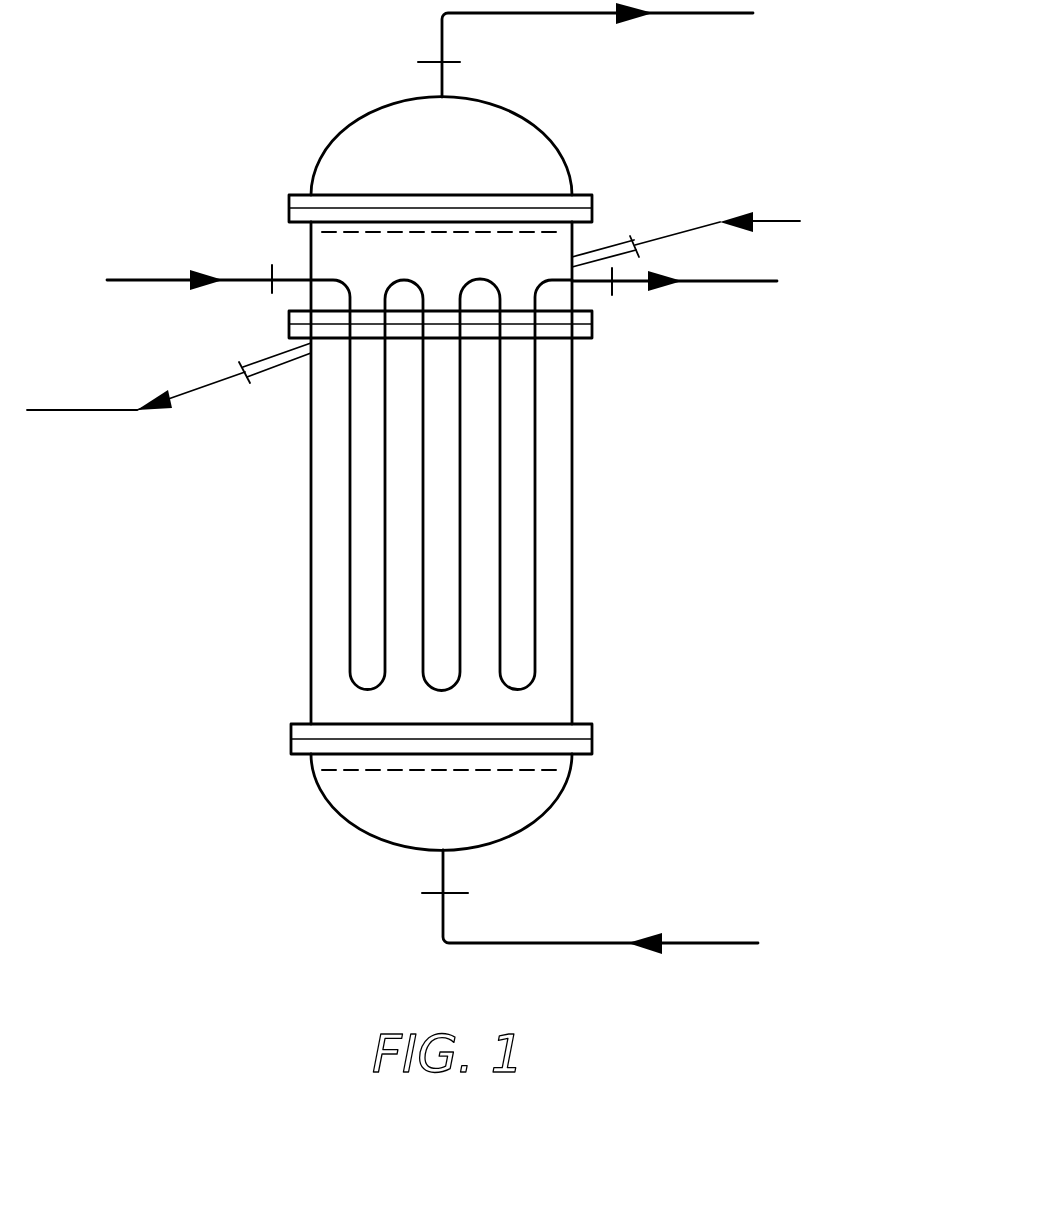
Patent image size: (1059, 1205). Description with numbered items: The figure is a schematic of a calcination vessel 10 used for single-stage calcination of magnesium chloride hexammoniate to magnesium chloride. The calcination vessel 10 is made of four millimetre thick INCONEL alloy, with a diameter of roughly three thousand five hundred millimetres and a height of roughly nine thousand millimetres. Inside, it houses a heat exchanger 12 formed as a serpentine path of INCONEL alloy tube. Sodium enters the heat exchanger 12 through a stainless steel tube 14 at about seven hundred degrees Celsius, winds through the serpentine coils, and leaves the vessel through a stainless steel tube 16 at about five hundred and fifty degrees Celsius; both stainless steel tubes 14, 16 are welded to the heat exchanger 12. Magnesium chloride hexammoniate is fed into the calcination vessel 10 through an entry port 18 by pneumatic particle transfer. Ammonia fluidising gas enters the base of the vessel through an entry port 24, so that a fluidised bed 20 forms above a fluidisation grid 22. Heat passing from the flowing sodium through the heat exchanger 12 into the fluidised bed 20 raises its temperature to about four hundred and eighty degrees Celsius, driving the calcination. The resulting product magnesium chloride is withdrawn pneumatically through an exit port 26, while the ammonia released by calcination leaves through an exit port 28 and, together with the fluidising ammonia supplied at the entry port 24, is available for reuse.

The calcination vessel 10 is at (311, 593).
The heat exchanger 12 is at (535, 672).
The stainless steel tube 14 is at (240, 278).
The stainless steel tube 16 is at (633, 288).
The entry port 18 is at (575, 262).
The fluidised bed 20 is at (557, 491).
The fluidisation grid 22 is at (492, 770).
The entry port 24 is at (440, 851).
The exit port 26 is at (302, 363).
The exit port 28 is at (437, 96).